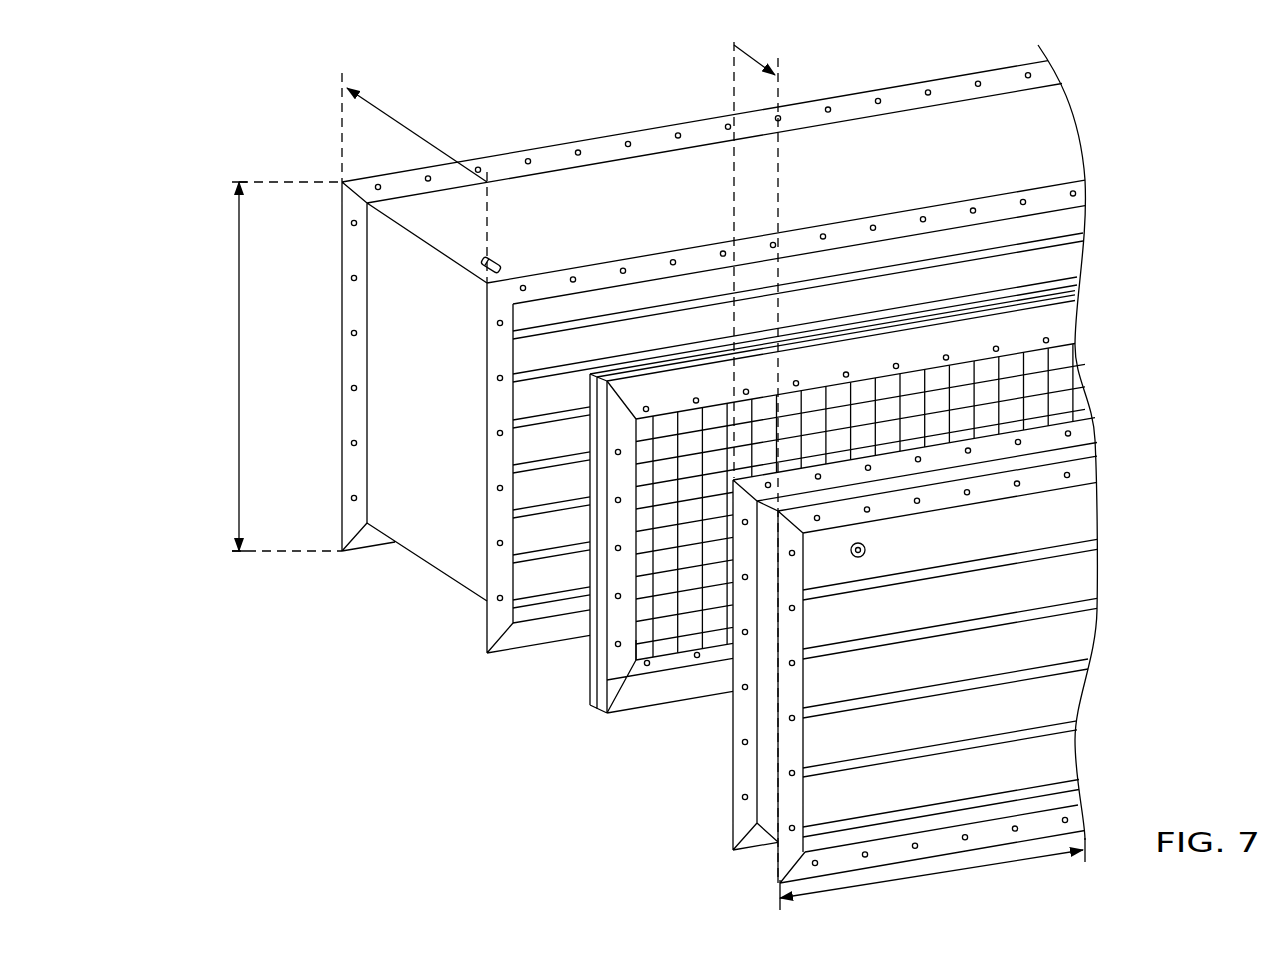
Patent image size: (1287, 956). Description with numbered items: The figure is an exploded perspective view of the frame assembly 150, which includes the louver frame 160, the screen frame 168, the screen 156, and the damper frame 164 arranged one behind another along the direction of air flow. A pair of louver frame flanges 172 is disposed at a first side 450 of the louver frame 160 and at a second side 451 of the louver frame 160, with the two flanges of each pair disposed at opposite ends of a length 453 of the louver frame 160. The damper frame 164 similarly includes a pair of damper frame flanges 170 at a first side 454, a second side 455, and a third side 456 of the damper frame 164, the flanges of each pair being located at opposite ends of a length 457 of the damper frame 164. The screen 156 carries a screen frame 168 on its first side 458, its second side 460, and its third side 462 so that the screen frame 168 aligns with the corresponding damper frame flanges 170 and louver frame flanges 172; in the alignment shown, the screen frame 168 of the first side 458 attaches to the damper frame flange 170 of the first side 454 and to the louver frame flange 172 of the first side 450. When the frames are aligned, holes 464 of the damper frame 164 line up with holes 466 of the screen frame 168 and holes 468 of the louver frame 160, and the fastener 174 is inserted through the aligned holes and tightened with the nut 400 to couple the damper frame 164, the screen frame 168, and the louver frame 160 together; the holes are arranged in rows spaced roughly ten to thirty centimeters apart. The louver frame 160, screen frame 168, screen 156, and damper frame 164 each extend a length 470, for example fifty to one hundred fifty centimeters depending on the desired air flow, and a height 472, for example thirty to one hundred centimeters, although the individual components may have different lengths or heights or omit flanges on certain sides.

The frame assembly 150 is at (1224, 246).
The screen 156 is at (645, 598).
The louver frame 160 is at (765, 803).
The damper frame 164 is at (430, 538).
The screen frame 168 is at (868, 337).
The damper frame flanges 170 is at (700, 252).
The louver frame flanges 172 is at (1035, 413).
The fastener 174 is at (505, 263).
The nut 400 is at (866, 548).
The first side of the louver frame 450 is at (983, 448).
The second side of the louver frame 451 is at (716, 709).
The length of the louver frame 453 is at (780, 77).
The first side of the damper frame 454 is at (644, 103).
The second side of the damper frame 455 is at (311, 319).
The third side of the damper frame 456 is at (458, 600).
The length of the damper frame 457 is at (397, 122).
The first side of the screen 458 is at (935, 315).
The second side of the screen 460 is at (576, 658).
The third side of the screen 462 is at (639, 717).
The holes of the damper frame 464 is at (576, 278).
The holes of the screen frame 466 is at (696, 397).
The holes of the louver frame 468 is at (822, 479).
The length 470 is at (945, 872).
The height 472 is at (239, 365).